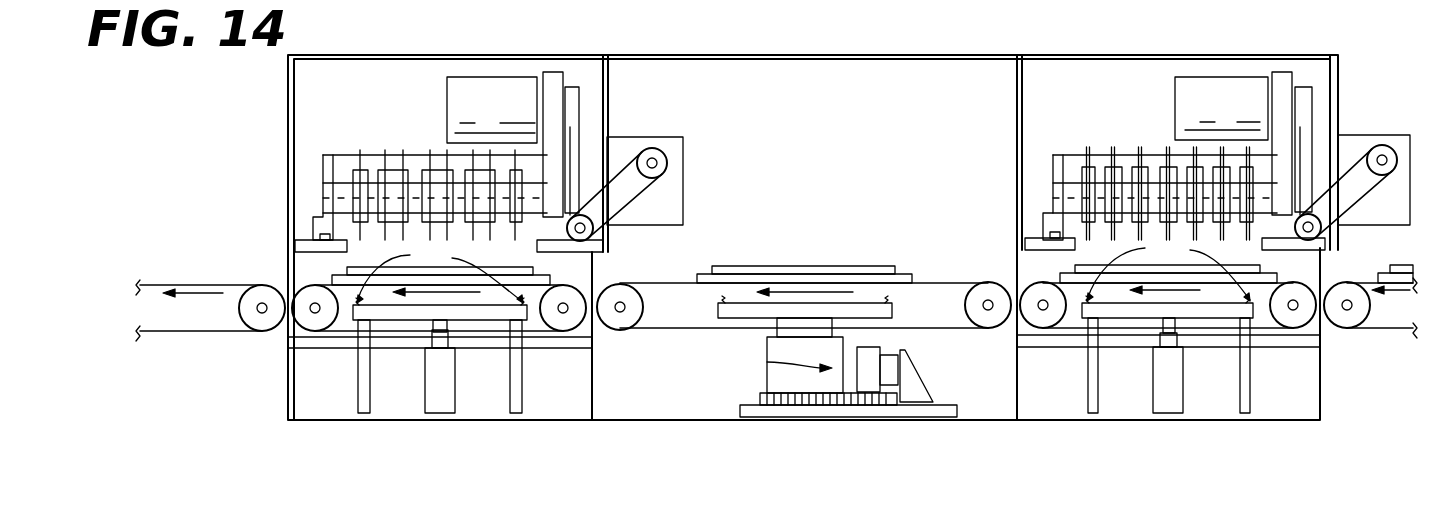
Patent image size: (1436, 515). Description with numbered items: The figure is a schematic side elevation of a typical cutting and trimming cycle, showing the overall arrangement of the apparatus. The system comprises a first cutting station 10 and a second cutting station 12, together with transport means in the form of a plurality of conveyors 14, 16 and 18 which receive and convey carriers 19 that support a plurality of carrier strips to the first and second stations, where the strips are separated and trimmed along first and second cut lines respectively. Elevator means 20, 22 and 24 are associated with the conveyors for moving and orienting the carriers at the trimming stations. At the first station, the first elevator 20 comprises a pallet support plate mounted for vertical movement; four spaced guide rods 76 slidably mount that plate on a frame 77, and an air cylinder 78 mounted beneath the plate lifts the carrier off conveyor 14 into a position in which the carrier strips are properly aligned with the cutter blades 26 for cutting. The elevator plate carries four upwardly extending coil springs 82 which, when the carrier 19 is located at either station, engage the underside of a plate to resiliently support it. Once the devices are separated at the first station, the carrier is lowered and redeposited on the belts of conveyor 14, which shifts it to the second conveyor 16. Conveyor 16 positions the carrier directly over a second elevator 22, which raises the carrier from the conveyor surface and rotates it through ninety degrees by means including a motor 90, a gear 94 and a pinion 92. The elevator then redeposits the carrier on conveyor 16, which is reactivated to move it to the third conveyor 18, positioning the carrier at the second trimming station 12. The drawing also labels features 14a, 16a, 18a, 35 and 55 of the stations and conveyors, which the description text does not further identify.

The first cutting station 10 is at (1282, 50).
The second cutting station 12 is at (420, 77).
The conveyor 14 is at (1030, 278).
The station frame 14a is at (1262, 377).
The second conveyor 16 is at (685, 332).
The transfer station support 16a is at (915, 343).
The third conveyor 18 is at (337, 330).
The lift table support 18a is at (490, 352).
The carrier 19 is at (330, 275).
The first elevator 20 is at (1123, 390).
The second elevator 22 is at (752, 381).
The elevator means 24 is at (312, 395).
The cutter blades 26 is at (385, 150).
The drive housing 35 is at (467, 112).
The belt drive 55 is at (640, 190).
The guide rods 76 is at (527, 387).
The frame 77 is at (1266, 347).
The air cylinder 78 is at (1228, 403).
The coil springs 82 is at (803, 270).
The motor 90 is at (873, 353).
The pinion 92 is at (908, 400).
The gear 94 is at (760, 398).